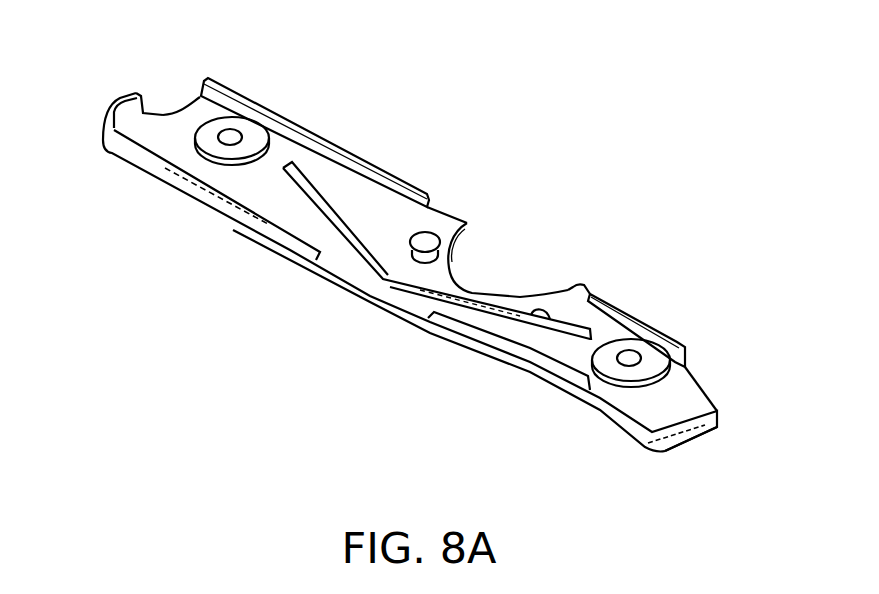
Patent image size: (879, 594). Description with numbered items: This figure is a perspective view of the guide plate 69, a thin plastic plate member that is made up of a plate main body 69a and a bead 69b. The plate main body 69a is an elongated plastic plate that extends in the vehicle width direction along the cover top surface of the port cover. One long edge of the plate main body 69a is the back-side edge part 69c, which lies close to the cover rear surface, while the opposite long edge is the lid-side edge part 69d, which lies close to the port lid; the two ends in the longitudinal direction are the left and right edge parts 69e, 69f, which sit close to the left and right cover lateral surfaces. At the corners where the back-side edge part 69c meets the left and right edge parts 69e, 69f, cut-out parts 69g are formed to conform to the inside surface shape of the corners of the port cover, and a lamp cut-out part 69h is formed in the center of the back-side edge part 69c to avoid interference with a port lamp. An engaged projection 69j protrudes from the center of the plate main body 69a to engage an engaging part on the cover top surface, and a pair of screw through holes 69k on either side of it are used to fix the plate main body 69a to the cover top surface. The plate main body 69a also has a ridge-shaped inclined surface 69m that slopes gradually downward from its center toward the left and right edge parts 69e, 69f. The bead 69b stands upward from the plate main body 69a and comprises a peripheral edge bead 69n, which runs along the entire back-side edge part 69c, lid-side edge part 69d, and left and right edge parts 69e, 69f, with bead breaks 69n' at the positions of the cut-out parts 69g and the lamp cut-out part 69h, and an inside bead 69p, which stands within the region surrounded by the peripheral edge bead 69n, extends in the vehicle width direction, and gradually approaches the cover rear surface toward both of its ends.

The guide plate 69 is at (400, 128).
The plate main body 69a is at (563, 298).
The bead 69b is at (400, 438).
The back-side edge part 69c is at (343, 150).
The lid-side edge part 69d is at (323, 275).
The left edge part 69e is at (693, 443).
The right edge part 69f is at (112, 107).
The cut-out part 69g is at (182, 110).
The lamp cut-out part 69h is at (530, 297).
The engaged projection 69j is at (428, 243).
The screw through hole 69k is at (237, 134).
The ridge-shaped inclined surface 69m is at (579, 371).
The peripheral edge bead 69n is at (449, 341).
The bead break 69n' is at (443, 234).
The inside bead 69p is at (517, 327).